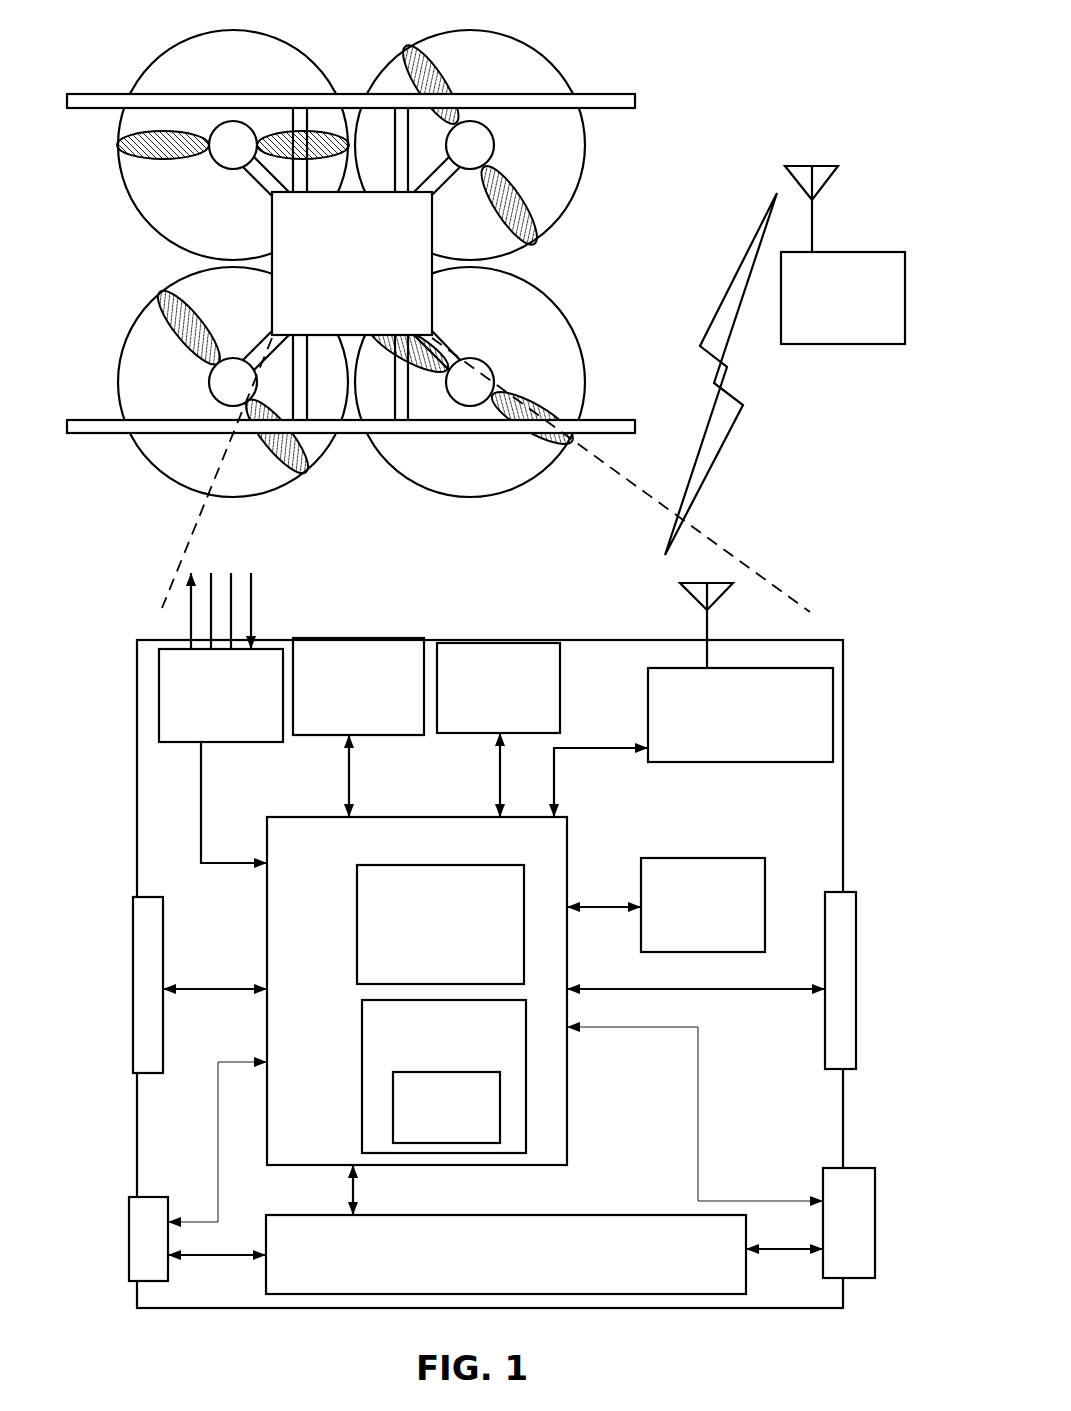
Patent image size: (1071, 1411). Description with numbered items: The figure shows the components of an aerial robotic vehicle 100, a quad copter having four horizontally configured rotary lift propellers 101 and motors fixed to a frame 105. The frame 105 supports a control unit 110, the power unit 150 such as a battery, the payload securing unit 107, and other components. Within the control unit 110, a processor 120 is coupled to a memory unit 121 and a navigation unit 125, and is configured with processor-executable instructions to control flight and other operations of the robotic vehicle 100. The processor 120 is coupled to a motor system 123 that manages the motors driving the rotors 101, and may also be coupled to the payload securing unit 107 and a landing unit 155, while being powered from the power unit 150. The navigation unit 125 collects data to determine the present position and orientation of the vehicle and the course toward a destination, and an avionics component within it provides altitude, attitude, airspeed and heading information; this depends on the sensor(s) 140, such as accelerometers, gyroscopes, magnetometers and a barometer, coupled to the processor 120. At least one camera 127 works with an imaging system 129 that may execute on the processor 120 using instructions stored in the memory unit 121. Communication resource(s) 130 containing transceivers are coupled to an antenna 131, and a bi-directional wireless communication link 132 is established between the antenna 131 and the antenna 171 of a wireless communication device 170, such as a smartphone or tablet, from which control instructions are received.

The aerial robotic vehicle 100 is at (562, 262).
The rotary lift propellers 101 is at (528, 38).
The frame 105 is at (602, 110).
The payload securing unit 107 is at (131, 1040).
The control unit 110 is at (432, 290).
The processor 120 is at (568, 867).
The memory unit 121 is at (718, 858).
The motor system 123 is at (165, 703).
The navigation unit 125 is at (362, 1068).
The camera 127 is at (380, 638).
The imaging system 129 is at (357, 937).
The communication resource(s) 130 is at (648, 678).
The antenna 131 is at (693, 603).
The bi-directional wireless communication link 132 is at (698, 452).
The sensor(s) 140 is at (500, 643).
The power unit 150 is at (585, 1294).
The landing unit 155 is at (129, 1280).
The wireless communication device 170 is at (848, 345).
The antenna 171 is at (836, 188).